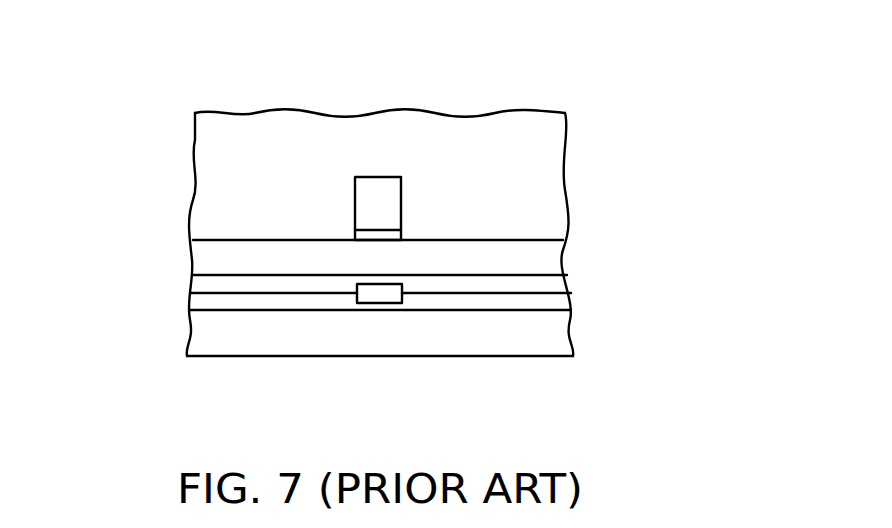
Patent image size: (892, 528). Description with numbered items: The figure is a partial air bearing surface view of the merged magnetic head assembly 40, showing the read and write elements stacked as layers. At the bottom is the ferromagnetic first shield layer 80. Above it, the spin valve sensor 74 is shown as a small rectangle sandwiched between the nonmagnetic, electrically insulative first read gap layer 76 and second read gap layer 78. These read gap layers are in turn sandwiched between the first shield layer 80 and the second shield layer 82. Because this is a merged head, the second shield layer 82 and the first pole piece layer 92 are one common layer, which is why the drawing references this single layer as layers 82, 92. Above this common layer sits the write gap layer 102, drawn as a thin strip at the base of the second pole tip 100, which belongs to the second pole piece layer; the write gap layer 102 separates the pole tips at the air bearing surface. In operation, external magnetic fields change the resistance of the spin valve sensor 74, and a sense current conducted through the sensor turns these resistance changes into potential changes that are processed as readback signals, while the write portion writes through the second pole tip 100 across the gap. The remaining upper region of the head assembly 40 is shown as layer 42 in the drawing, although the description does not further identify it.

The merged magnetic head assembly 40 is at (608, 123).
The upper dielectric layer 42 is at (203, 145).
The second pole tip 100 is at (383, 183).
The write gap layer 102 is at (314, 207).
The second shield layer 82 is at (200, 259).
The first pole piece layer 92 is at (307, 262).
The first shield layer 80 is at (560, 317).
The second read gap layer 78 is at (525, 282).
The first read gap layer 76 is at (245, 310).
The spin valve sensor 74 is at (381, 295).